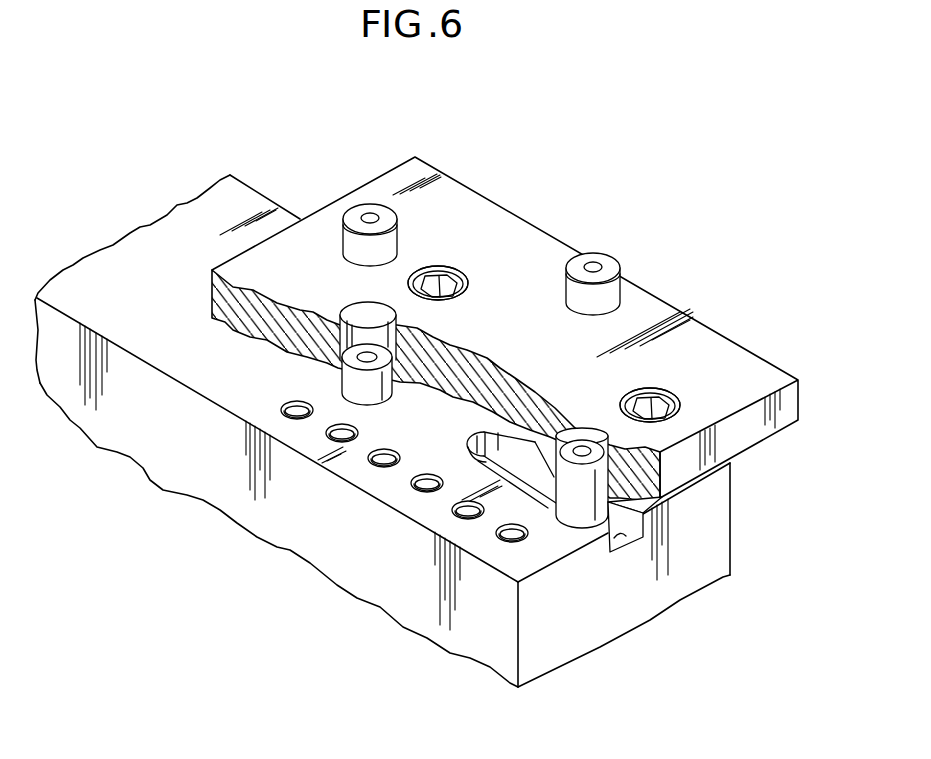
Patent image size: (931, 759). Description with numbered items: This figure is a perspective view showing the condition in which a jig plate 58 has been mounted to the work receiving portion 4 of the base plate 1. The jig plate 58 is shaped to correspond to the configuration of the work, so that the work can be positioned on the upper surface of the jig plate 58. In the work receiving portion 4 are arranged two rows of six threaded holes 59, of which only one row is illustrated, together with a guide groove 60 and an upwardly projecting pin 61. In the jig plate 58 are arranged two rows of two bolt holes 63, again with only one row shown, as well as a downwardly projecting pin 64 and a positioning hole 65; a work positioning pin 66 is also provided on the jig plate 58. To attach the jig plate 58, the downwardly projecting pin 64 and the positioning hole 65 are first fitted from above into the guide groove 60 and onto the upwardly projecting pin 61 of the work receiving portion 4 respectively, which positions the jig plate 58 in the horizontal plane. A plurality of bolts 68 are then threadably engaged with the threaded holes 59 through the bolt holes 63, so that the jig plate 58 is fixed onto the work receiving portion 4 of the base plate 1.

The base plate 1 is at (144, 484).
The work receiving portion 4 is at (282, 510).
The jig plate 58 is at (660, 284).
The threaded holes 59 is at (406, 488).
The guide groove 60 is at (632, 548).
The upwardly projecting pin 61 is at (383, 392).
The bolt holes 63 is at (437, 266).
The downwardly projecting pin 64 is at (586, 429).
The positioning hole 65 is at (365, 318).
The work positioning pin 66 is at (354, 207).
The bolts 68 is at (463, 275).